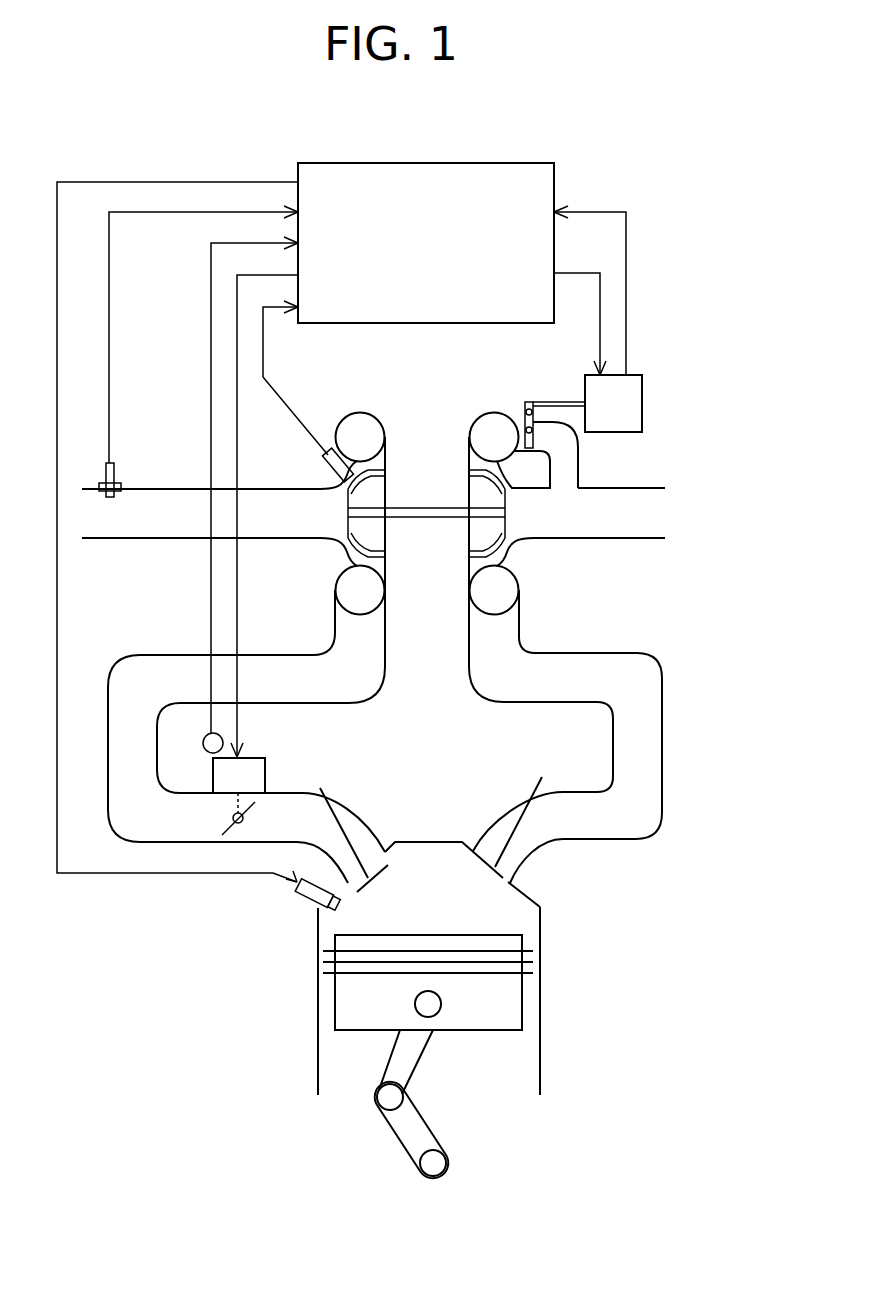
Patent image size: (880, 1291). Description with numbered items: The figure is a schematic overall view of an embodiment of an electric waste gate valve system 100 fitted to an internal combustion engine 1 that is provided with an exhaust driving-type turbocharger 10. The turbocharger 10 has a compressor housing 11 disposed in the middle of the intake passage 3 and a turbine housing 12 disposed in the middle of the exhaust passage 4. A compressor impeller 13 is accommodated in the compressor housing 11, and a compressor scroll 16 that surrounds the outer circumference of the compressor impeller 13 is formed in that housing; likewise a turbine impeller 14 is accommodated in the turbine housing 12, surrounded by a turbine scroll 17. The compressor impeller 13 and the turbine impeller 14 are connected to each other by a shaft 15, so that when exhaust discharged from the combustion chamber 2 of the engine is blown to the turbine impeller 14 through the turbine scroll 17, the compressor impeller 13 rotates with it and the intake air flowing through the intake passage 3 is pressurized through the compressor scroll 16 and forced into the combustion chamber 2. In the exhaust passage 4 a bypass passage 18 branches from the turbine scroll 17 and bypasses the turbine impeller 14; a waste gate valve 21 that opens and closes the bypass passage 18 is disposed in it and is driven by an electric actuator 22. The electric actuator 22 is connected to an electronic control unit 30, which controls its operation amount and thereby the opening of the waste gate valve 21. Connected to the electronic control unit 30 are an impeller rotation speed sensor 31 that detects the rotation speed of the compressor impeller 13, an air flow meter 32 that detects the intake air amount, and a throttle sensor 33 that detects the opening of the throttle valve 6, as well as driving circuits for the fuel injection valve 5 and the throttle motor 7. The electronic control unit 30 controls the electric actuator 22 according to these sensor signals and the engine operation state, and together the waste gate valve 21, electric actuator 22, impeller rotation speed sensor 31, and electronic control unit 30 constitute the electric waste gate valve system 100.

The internal combustion engine 1 is at (385, 905).
The combustion chamber 2 is at (419, 898).
The intake passage 3 is at (160, 543).
The exhaust passage 4 is at (628, 541).
The fuel injection valve 5 is at (307, 901).
The throttle valve 6 is at (233, 823).
The throttle motor 7 is at (266, 768).
The turbocharger 10 is at (357, 386).
The compressor housing 11 is at (336, 540).
The turbine housing 12 is at (518, 540).
The compressor impeller 13 is at (377, 483).
The turbine impeller 14 is at (477, 483).
The shaft 15 is at (425, 518).
The compressor scroll 16 is at (348, 449).
The turbine scroll 17 is at (482, 449).
The bypass passage 18 is at (578, 466).
The waste gate valve 21 is at (517, 415).
The electric actuator 22 is at (645, 401).
The electronic control unit 30 is at (427, 324).
The impeller rotation speed sensor 31 is at (326, 468).
The air flow meter 32 is at (118, 478).
The throttle sensor 33 is at (224, 740).
The electric waste gate valve system 100 is at (704, 177).